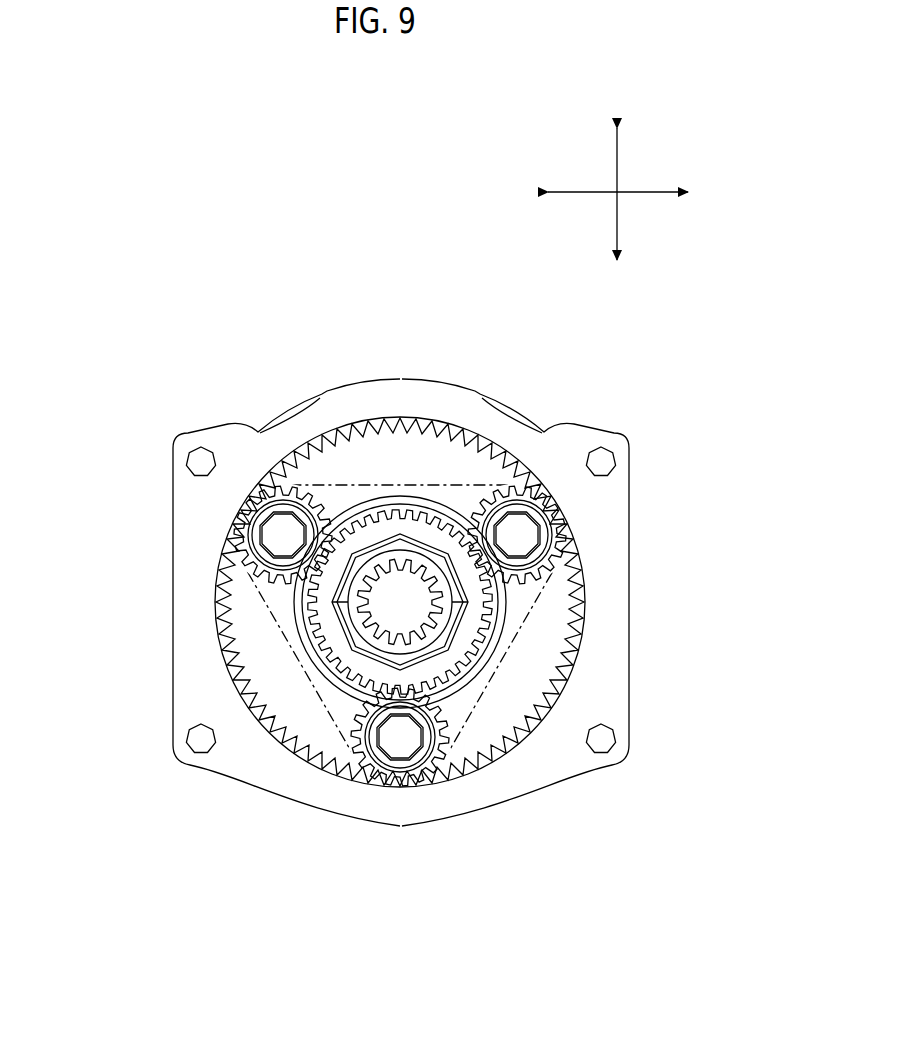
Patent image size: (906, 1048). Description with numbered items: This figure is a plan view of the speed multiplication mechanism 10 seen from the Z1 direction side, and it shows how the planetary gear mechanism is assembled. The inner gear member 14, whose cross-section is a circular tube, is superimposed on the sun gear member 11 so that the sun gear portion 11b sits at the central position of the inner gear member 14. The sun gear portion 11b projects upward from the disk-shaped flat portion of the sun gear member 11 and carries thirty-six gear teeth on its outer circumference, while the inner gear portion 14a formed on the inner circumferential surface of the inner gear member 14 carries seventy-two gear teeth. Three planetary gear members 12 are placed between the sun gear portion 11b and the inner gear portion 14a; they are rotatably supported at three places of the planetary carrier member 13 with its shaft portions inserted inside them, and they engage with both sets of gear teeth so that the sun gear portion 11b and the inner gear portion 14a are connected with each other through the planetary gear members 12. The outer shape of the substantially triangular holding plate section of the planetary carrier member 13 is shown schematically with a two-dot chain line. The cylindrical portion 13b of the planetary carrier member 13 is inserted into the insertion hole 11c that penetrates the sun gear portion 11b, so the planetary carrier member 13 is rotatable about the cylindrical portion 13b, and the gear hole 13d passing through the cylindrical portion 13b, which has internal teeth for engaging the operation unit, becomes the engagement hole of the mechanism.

The speed multiplication mechanism 10 is at (250, 249).
The sun gear member 11 is at (463, 650).
The sun gear portion 11b is at (462, 626).
The insertion hole 11c is at (468, 612).
The planetary gear member 12 is at (238, 533).
The planetary carrier member 13 is at (412, 482).
The cylindrical portion 13b is at (365, 643).
The gear hole 13d is at (397, 602).
The inner gear member 14 is at (232, 758).
The inner gear portion 14a is at (222, 630).